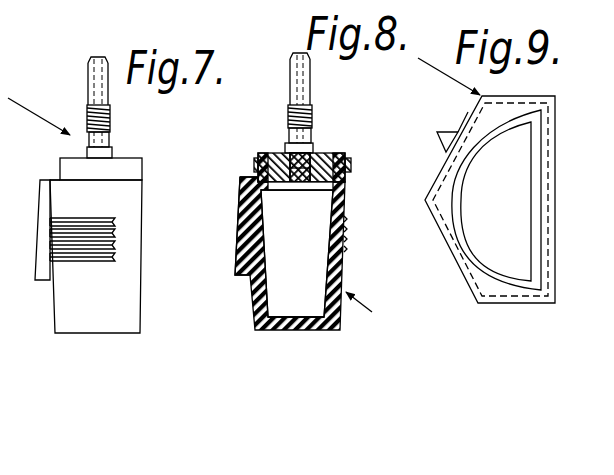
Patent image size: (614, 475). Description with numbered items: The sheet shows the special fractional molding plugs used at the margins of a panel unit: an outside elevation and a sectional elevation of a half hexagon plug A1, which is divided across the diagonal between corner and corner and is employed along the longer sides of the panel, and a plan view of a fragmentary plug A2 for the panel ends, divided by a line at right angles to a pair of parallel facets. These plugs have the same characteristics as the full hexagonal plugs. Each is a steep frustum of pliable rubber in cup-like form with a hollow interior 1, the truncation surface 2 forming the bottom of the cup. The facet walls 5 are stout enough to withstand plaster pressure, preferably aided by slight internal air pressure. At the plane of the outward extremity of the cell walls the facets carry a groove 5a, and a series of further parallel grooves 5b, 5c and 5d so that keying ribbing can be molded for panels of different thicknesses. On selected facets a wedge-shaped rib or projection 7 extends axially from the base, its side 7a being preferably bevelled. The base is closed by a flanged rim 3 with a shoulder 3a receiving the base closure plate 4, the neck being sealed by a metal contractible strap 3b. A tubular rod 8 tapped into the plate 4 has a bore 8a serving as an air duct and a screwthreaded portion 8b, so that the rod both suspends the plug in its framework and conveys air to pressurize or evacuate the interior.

In FIG. 8, the hollow interior 1 is at (298, 259).
In FIG. 9, the hollow interior 1 is at (505, 213).
In FIG. 8, the truncation surface 2 is at (268, 320).
In FIG. 7, the rim 3 is at (127, 168).
In FIG. 8, the rim 3 is at (301, 162).
In FIG. 9, the rim 3 is at (473, 151).
In FIG. 7, the shoulder 3a is at (52, 180).
In FIG. 8, the shoulder 3a is at (254, 176).
In FIG. 9, the shoulder 3a is at (493, 285).
In FIG. 8, the metal contractible strap 3b is at (349, 157).
In FIG. 8, the base closure plate 4 is at (314, 170).
In FIG. 7, the facet walls 5 is at (68, 308).
In FIG. 8, the facet walls 5 is at (290, 253).
In FIG. 9, the facet walls 5 is at (462, 254).
In FIG. 7, the groove 5a is at (116, 257).
In FIG. 8, the groove 5a is at (344, 248).
In FIG. 7, the groove 5b is at (116, 245).
In FIG. 8, the groove 5b is at (344, 238).
In FIG. 7, the groove 5c is at (116, 233).
In FIG. 8, the groove 5c is at (344, 228).
In FIG. 7, the groove 5d is at (115, 222).
In FIG. 8, the groove 5d is at (344, 218).
In FIG. 7, the rib or projection 7 is at (36, 225).
In FIG. 8, the rib or projection 7 is at (246, 226).
In FIG. 9, the rib or projection 7 is at (435, 137).
In FIG. 9, the side of projection 7a is at (452, 130).
In FIG. 7, the rod 8 is at (87, 92).
In FIG. 8, the rod 8 is at (312, 72).
In FIG. 7, the bore 8a is at (100, 76).
In FIG. 8, the bore 8a is at (305, 80).
In FIG. 7, the screwthreaded portion 8b is at (110, 118).
In FIG. 8, the screwthreaded portion 8b is at (292, 120).
In FIG. 7, the half hexagon plug A1 is at (35, 98).
In FIG. 8, the half hexagon plug A1 is at (368, 312).
In FIG. 9, the fractional plug A2 is at (438, 61).